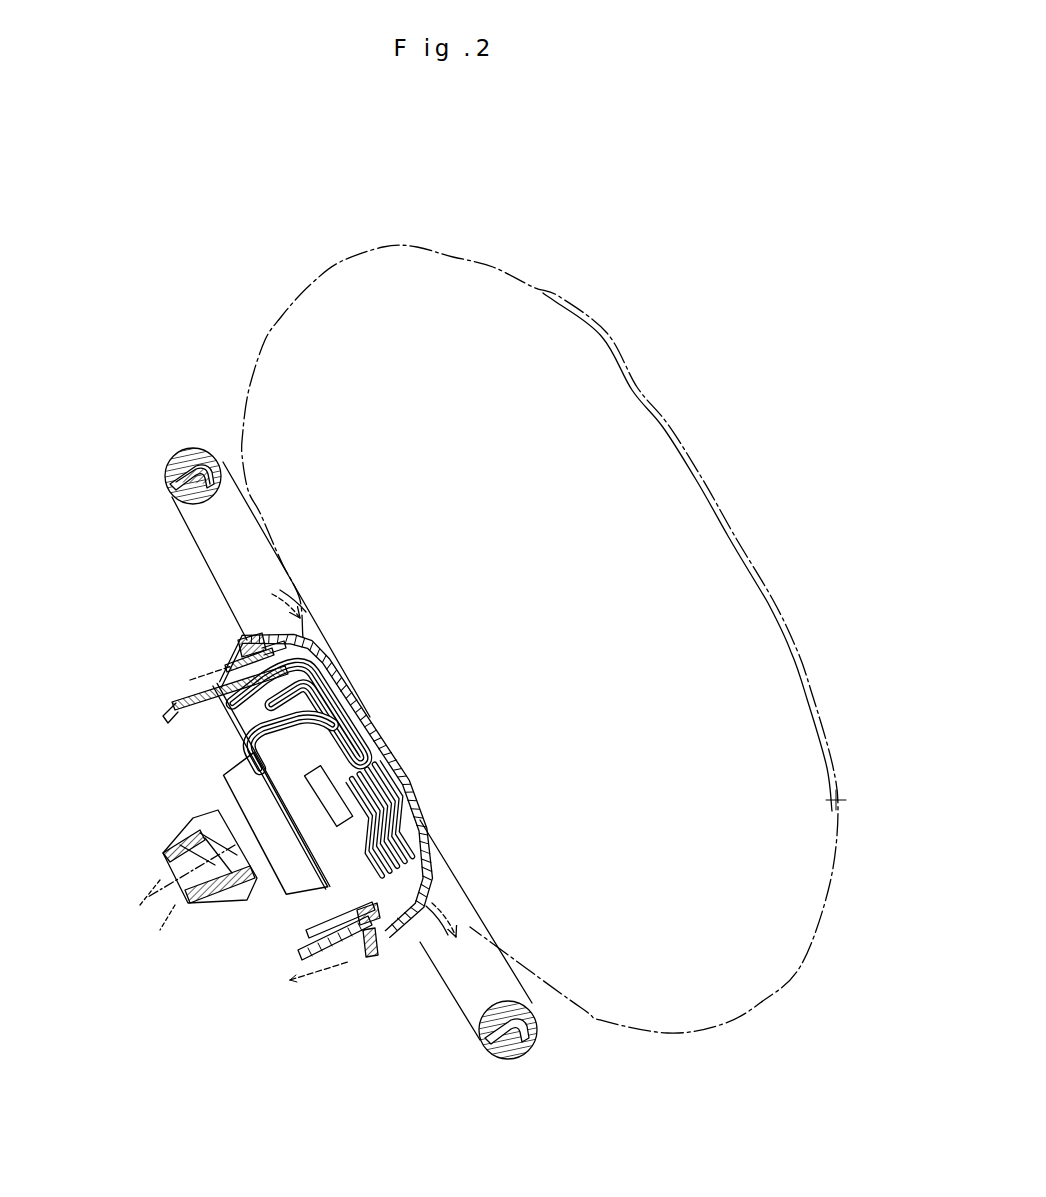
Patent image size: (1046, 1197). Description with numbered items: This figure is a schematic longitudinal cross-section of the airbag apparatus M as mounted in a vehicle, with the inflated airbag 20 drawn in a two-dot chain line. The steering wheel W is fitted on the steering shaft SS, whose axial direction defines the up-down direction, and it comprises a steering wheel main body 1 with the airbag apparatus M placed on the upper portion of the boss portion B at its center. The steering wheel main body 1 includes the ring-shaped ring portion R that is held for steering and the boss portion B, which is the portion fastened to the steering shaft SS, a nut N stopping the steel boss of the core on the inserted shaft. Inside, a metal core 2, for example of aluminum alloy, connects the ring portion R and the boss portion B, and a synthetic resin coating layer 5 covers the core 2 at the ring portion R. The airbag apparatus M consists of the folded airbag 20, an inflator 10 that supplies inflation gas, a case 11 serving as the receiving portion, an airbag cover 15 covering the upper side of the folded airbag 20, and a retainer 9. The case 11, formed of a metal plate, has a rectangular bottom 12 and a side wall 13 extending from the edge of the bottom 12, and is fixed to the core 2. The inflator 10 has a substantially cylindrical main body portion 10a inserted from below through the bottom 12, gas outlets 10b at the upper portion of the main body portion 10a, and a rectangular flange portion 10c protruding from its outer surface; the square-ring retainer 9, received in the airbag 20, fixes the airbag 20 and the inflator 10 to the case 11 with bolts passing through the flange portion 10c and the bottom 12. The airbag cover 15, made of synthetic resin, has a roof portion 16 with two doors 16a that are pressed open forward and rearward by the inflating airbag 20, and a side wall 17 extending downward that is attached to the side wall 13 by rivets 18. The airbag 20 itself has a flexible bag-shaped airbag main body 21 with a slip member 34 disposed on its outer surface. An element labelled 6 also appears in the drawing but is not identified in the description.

The steering wheel main body 1 is at (307, 995).
The core 2 is at (514, 1052).
The coating layer 5 is at (520, 1042).
The boss portion 6 is at (187, 677).
The retainer 9 is at (330, 888).
The inflator 10 is at (232, 782).
The main body portion 10a is at (245, 790).
The gas outlets 10b is at (370, 815).
The flange portion 10c is at (300, 832).
The case 11 is at (312, 900).
The bottom 12 is at (328, 922).
The side wall 13 is at (243, 633).
The airbag cover 15 is at (393, 950).
The roof portion 16 is at (412, 783).
The doors 16a is at (322, 652).
The side wall 17 is at (203, 673).
The rivets 18 is at (180, 693).
The airbag 20 is at (507, 182).
The airbag main body 21 is at (500, 262).
The slip member 34 is at (560, 296).
The boss portion B is at (255, 975).
The airbag apparatus M is at (205, 748).
The nut N is at (230, 893).
The ring portion R is at (196, 449).
The steering shaft SS is at (167, 890).
The steering wheel W is at (388, 1062).